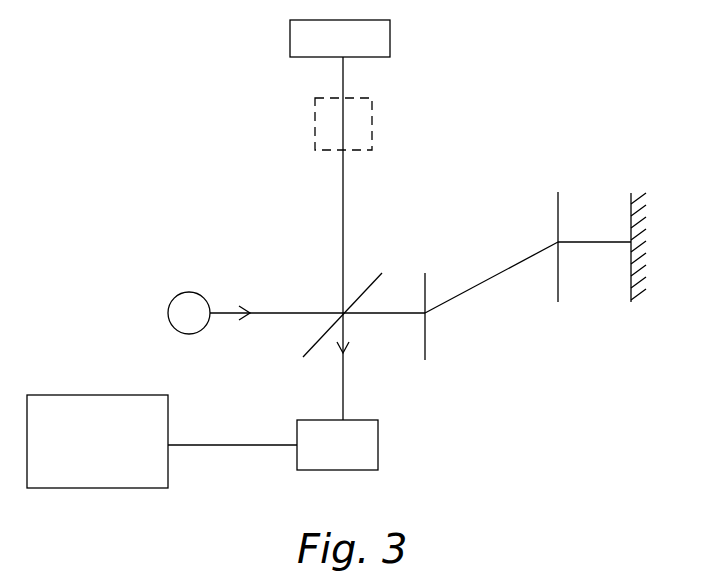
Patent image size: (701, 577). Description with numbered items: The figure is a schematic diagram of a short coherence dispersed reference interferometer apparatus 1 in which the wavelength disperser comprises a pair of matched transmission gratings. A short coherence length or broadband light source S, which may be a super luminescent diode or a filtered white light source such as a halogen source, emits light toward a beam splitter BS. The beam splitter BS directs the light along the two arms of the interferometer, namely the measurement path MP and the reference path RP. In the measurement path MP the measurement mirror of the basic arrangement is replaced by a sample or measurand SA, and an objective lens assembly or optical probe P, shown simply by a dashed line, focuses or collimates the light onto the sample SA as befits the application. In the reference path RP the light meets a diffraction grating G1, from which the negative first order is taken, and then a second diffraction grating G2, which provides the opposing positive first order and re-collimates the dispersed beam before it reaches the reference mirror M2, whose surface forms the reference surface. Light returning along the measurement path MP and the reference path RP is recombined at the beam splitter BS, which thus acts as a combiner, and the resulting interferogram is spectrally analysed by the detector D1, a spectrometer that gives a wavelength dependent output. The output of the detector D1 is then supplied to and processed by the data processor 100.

The short coherence dispersed reference interferometer apparatus 1 is at (503, 111).
The sample SA is at (390, 37).
The objective lens assembly P is at (329, 119).
The measurement path MP is at (345, 206).
The short coherence length light source S is at (296, 313).
The beam splitter BS is at (320, 325).
The reference path RP is at (388, 315).
The diffraction grating G1 is at (425, 300).
The diffraction grating G2 is at (585, 233).
The mirror M2 is at (630, 232).
The data processor 100 is at (90, 395).
The detector D1 is at (273, 445).